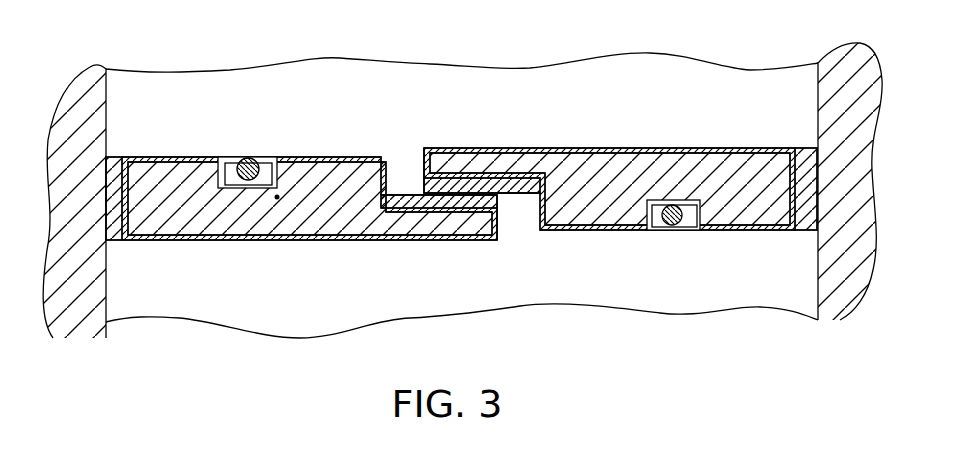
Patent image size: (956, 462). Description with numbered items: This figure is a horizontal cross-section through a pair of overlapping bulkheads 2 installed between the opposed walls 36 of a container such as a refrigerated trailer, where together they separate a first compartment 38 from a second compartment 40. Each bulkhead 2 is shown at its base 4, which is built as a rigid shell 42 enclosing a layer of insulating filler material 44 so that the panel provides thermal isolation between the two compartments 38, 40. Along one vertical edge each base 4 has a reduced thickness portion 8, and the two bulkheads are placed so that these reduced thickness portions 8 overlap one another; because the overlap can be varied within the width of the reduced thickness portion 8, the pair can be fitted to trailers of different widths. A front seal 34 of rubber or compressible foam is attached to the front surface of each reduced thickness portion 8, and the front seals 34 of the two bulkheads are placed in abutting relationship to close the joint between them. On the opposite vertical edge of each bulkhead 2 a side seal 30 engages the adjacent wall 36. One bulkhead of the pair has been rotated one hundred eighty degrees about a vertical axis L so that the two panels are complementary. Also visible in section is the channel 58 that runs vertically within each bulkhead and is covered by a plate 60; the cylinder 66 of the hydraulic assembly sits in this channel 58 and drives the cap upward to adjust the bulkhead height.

The bulkhead 2 is at (463, 189).
The base 4 is at (246, 242).
The reduced thickness portion 8 is at (508, 160).
The side seal 30 is at (115, 160).
The front seal 34 is at (398, 197).
The wall 36 is at (97, 277).
The first compartment 38 is at (649, 104).
The second compartment 40 is at (244, 322).
The shell 42 is at (299, 157).
The layer of insulating filler material 44 is at (310, 215).
The channel 58 is at (667, 200).
The plate 60 is at (668, 228).
The cylinder 66 is at (681, 230).
The vertical axis L is at (276, 200).